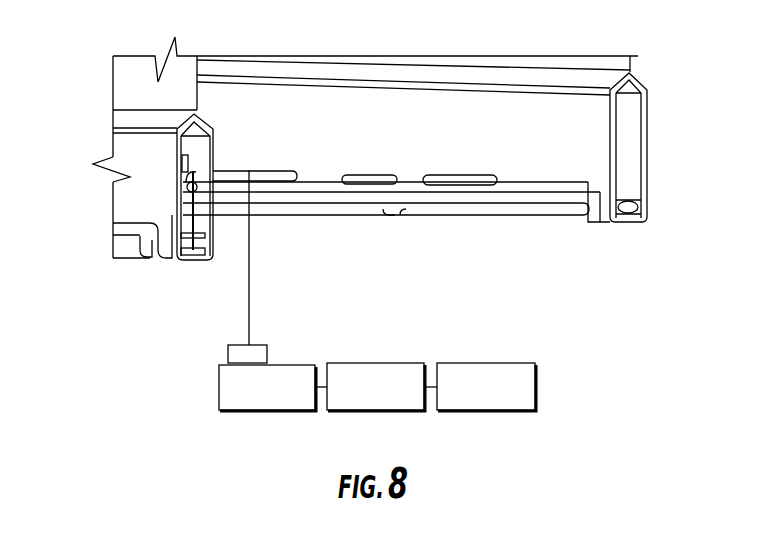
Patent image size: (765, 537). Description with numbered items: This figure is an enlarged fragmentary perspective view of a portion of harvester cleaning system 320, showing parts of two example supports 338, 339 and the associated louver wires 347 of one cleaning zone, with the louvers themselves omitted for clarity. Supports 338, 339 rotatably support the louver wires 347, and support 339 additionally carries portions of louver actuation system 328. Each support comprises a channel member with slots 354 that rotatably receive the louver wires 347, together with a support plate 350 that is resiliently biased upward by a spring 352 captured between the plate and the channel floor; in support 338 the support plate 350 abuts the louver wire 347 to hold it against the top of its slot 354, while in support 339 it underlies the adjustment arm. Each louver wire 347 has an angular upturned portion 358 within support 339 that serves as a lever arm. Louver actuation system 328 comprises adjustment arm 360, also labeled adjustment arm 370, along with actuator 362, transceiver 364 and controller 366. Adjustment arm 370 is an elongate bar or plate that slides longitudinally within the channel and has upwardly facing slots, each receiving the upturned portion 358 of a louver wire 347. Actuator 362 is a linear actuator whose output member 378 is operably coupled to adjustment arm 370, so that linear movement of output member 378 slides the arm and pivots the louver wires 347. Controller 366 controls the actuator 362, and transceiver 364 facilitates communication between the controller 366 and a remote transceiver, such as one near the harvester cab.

The harvester cleaning system 320 is at (84, 116).
The support 339 is at (118, 121).
The louver actuation system 328 is at (104, 352).
The adjustment arm 370 is at (192, 170).
The support 338 is at (648, 110).
The louver wires 347 is at (258, 181).
The slots 354 is at (302, 171).
The adjustment arm 360 is at (190, 211).
The upturned portion 358 is at (195, 190).
The spring 352 is at (197, 260).
The support plate 350 is at (637, 196).
The output member 378 is at (228, 352).
The actuator 362 is at (238, 410).
The controller 366 is at (390, 363).
The transceiver 364 is at (512, 363).